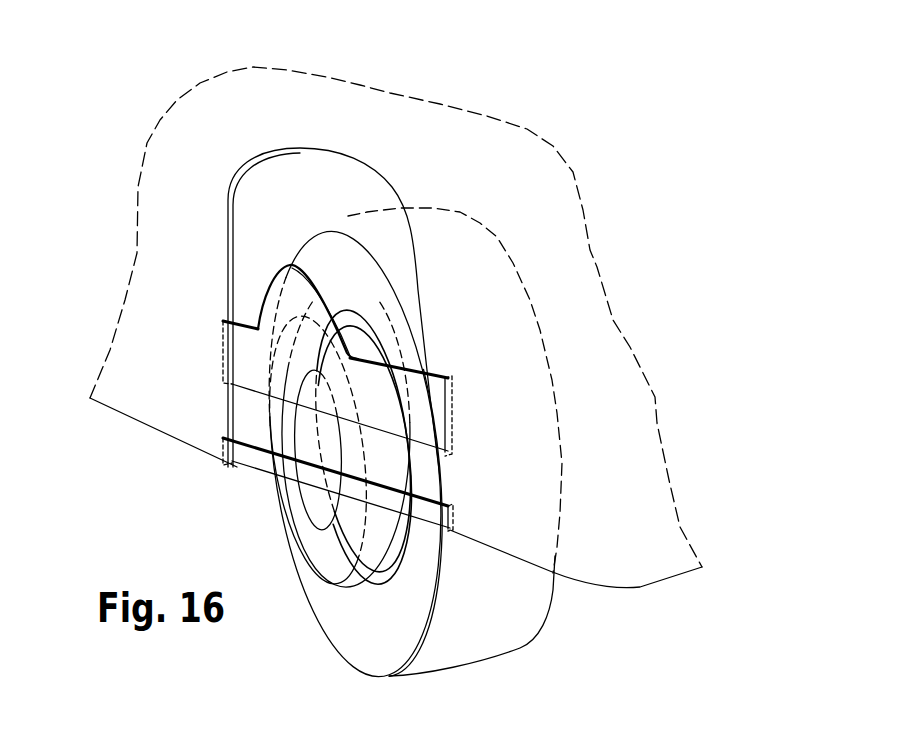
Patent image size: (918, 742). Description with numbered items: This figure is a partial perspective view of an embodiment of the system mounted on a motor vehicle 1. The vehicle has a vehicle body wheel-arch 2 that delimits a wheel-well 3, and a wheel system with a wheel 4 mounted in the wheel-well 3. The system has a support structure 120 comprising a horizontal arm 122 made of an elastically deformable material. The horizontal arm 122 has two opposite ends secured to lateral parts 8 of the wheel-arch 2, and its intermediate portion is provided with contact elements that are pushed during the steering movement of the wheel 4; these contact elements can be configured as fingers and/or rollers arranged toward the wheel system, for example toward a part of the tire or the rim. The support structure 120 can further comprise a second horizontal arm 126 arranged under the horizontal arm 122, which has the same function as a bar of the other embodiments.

The motor vehicle 1 is at (95, 95).
The vehicle body wheel-arch 2 is at (354, 195).
The wheel-well 3 is at (360, 158).
The wheel 4 is at (370, 232).
The lateral parts of the arch 8 is at (198, 290).
The support structure 120 is at (162, 469).
The horizontal arm 122 is at (253, 362).
The second horizontal arm 126 is at (260, 458).